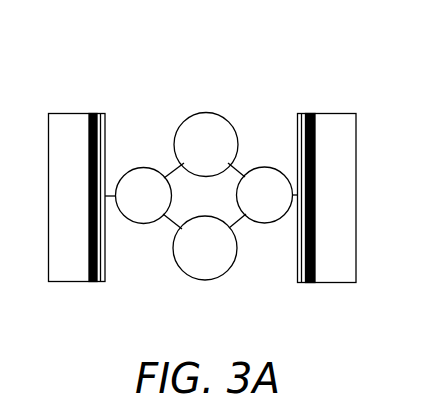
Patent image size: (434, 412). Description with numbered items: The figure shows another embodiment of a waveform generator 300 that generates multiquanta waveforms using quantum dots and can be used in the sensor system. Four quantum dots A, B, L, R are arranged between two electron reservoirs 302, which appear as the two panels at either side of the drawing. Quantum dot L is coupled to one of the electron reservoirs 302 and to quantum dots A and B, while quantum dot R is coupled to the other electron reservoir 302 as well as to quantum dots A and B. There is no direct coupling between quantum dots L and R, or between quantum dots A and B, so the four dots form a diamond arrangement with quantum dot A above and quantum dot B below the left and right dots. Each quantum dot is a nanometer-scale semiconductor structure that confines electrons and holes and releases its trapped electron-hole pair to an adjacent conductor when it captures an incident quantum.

The waveform generator 300 is at (150, 60).
The electron reservoir 302 is at (80, 113).
The quantum dot A is at (206, 145).
The quantum dot L is at (144, 196).
The quantum dot R is at (265, 195).
The quantum dot B is at (205, 248).